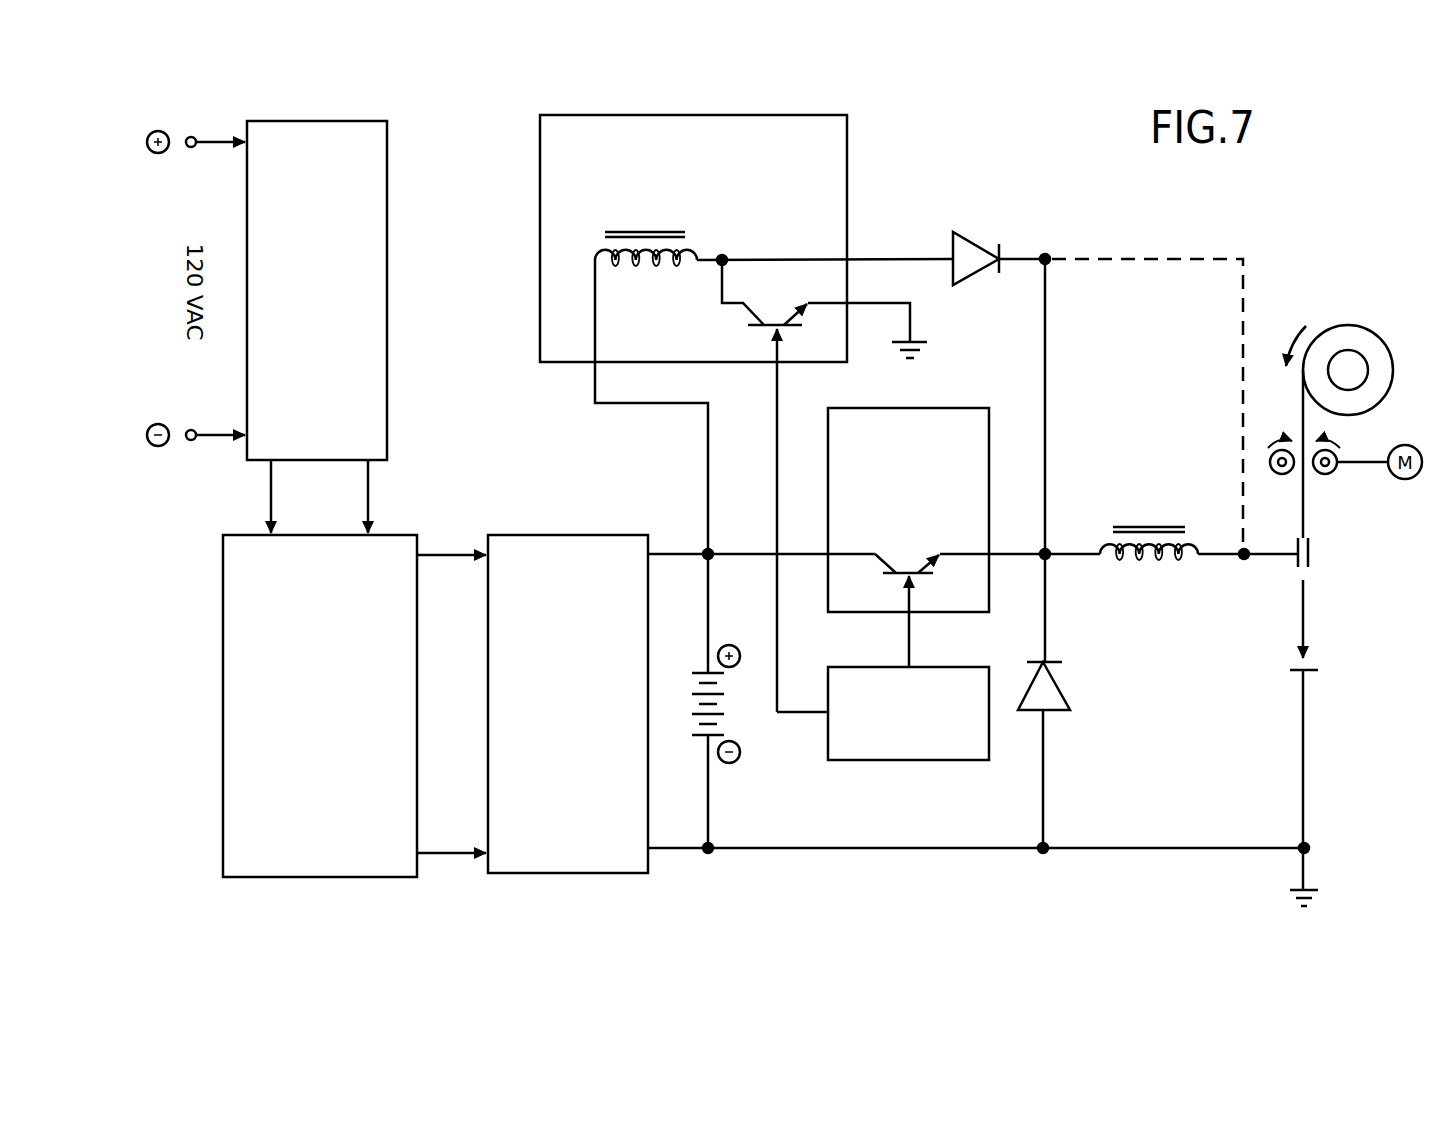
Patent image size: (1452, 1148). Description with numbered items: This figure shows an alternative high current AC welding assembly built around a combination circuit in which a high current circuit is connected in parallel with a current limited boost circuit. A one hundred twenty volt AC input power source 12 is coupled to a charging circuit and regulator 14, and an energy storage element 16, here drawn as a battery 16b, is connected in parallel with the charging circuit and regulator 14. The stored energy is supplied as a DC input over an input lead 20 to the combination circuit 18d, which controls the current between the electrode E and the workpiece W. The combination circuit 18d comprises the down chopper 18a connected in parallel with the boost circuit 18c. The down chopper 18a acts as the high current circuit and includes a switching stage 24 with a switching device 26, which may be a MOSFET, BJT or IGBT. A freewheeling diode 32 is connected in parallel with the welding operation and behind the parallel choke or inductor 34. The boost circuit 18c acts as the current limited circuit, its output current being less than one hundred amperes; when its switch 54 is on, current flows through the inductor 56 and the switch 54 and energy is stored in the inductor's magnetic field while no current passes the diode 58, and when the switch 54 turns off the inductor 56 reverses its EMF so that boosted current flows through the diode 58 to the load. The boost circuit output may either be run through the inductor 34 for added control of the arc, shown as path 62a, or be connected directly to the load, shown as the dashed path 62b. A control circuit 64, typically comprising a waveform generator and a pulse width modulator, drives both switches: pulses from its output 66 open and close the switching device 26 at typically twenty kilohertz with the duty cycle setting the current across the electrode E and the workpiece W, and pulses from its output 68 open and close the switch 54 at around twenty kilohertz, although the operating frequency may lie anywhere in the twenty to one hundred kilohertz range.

The input power source 12 is at (388, 157).
The charging circuit and regulator 14 is at (223, 616).
The energy storage element 16 is at (578, 535).
The battery 16b is at (695, 743).
The down chopper 18a is at (967, 400).
The boost circuit 18c is at (857, 130).
The combination circuit 18d is at (1013, 191).
The input lead 20 is at (738, 552).
The switching stage 24 is at (929, 584).
The switching device 26 is at (903, 568).
The freewheeling diode 32 is at (1063, 717).
The inductor 34 is at (1148, 568).
The switch 54 is at (768, 320).
The inductor 56 is at (670, 272).
The diode 58 is at (992, 243).
The boost circuit output through inductor 62a is at (1048, 327).
The boost circuit output connected directly to load 62b is at (1200, 258).
The control circuit 64 is at (928, 760).
The output of control circuit 66 is at (905, 635).
The output of control circuit 68 is at (774, 402).
The electrode E is at (1317, 650).
The workpiece W is at (1315, 677).